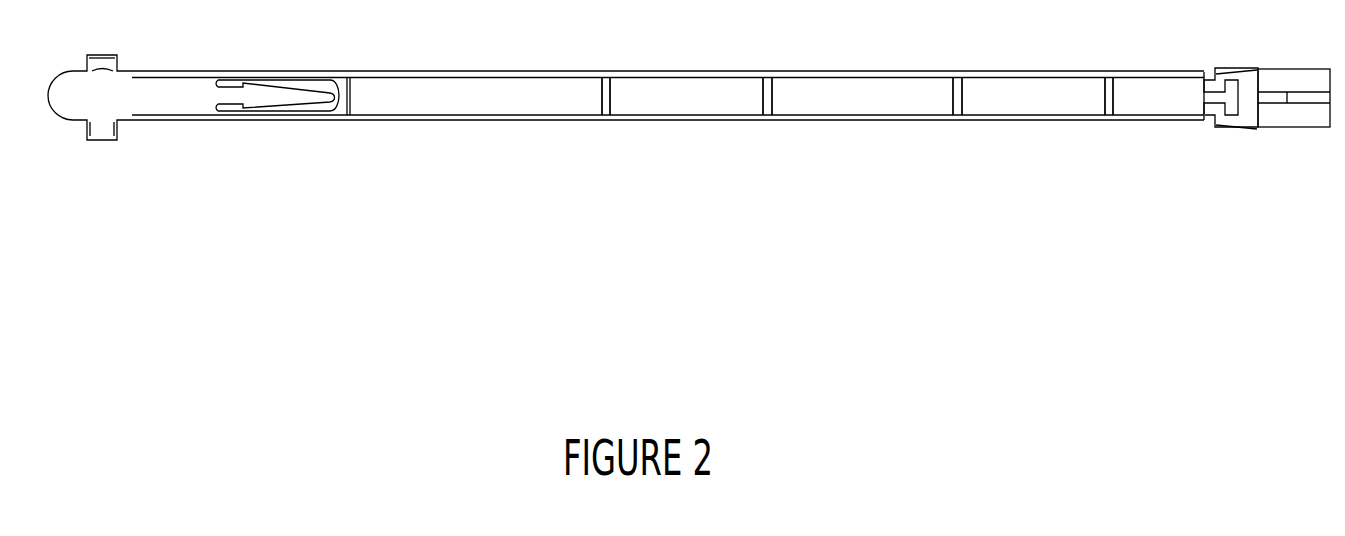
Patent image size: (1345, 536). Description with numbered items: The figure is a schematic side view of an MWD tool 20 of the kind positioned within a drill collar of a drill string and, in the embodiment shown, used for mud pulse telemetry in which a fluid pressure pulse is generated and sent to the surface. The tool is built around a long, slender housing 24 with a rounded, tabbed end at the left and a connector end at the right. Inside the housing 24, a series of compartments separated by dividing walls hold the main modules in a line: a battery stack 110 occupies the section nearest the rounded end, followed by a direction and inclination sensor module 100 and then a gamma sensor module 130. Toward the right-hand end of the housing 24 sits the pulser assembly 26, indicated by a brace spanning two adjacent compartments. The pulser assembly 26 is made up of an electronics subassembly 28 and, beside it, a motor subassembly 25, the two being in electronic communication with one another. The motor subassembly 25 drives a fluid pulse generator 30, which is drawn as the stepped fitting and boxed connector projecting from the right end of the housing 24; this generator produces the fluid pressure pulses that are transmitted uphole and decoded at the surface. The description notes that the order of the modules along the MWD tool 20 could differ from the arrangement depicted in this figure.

The MWD tool 20 is at (232, 212).
The housing 24 is at (563, 118).
The battery stack 110 is at (440, 90).
The direction and inclination (D&I) sensor module 100 is at (662, 95).
The gamma sensor module 130 is at (852, 95).
The pulser assembly 26 is at (1203, 67).
The electronics subassembly 28 is at (1035, 102).
The motor subassembly 25 is at (1147, 103).
The fluid pulse generator 30 is at (1277, 78).